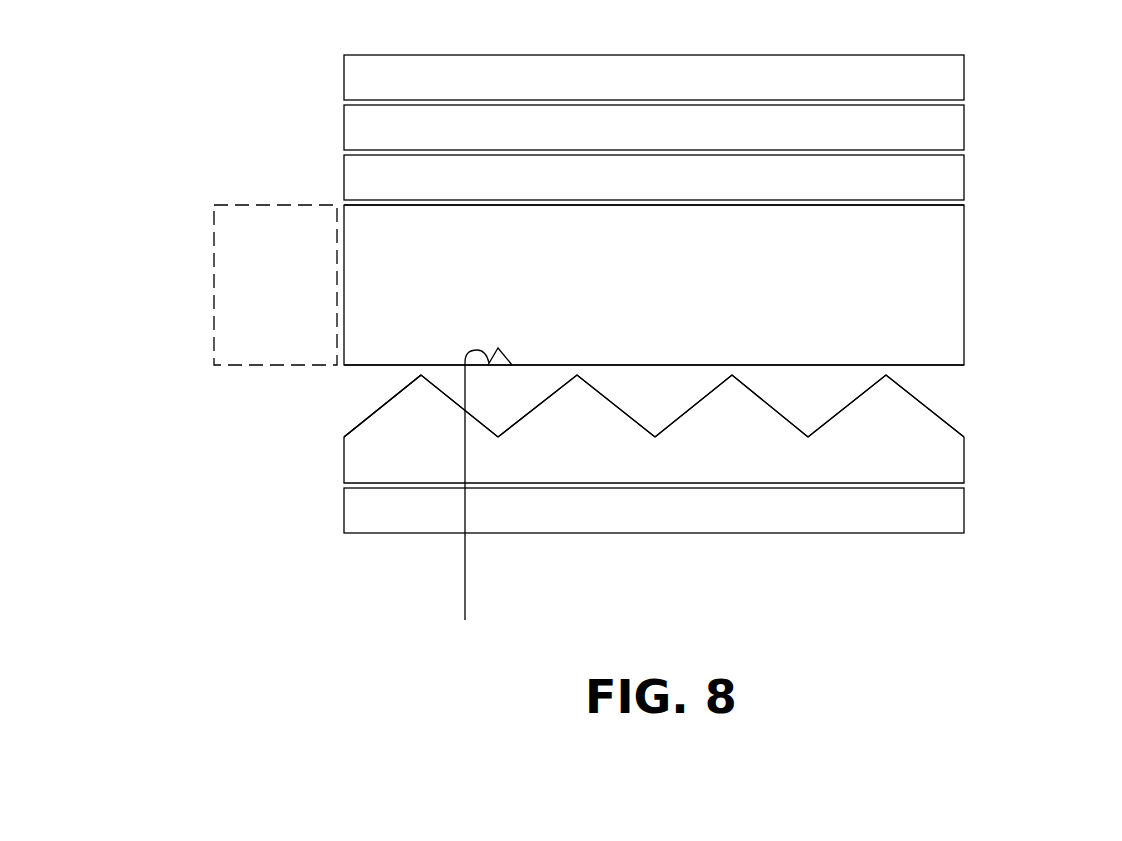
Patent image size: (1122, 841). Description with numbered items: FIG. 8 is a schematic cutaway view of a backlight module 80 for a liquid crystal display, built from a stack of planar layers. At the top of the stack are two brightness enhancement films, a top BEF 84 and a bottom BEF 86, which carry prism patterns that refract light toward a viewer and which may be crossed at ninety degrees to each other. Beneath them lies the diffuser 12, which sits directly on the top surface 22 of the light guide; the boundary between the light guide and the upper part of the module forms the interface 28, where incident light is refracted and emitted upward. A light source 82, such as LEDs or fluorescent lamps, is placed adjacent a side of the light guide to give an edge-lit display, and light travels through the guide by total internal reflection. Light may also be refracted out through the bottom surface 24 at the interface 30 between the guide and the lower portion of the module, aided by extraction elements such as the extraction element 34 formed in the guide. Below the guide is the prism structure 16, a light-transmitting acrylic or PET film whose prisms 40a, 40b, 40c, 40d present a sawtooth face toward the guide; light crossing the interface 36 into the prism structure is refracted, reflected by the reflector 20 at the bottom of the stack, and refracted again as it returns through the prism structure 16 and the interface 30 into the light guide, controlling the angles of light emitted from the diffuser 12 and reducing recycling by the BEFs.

The backlight module 80 is at (904, 680).
The top BEF 84 is at (343, 76).
The bottom BEF 86 is at (343, 128).
The diffuser 12 is at (343, 172).
The top surface 22 is at (373, 205).
The interface 28 is at (955, 204).
The light source 82 is at (253, 287).
The bottom surface 24 is at (363, 367).
The extraction element 34 is at (481, 502).
The prism structure 16 is at (343, 460).
The interface 30 is at (938, 379).
The interface 36 is at (374, 409).
The prism 40a is at (430, 407).
The prism 40b is at (578, 407).
The prism 40c is at (743, 407).
The prism 40d is at (893, 407).
The reflector 20 is at (343, 515).